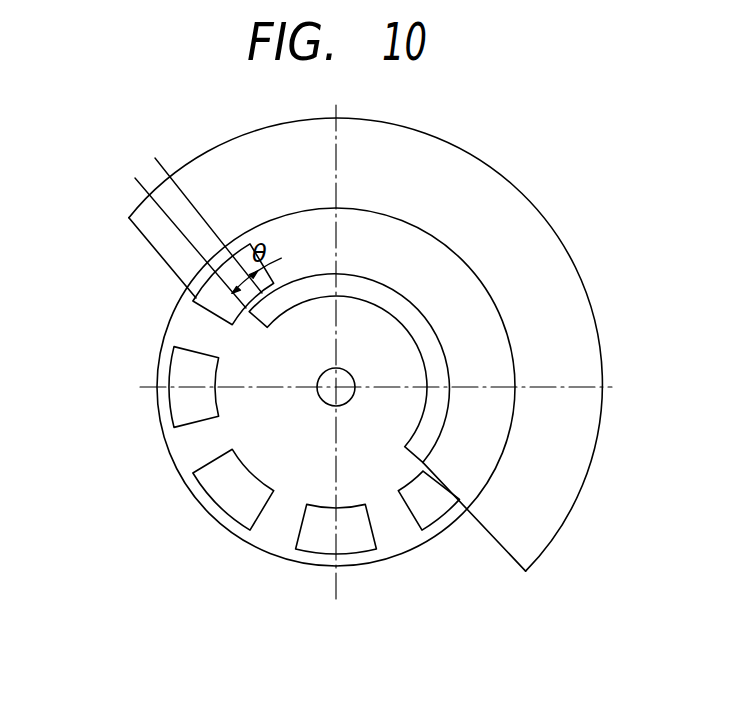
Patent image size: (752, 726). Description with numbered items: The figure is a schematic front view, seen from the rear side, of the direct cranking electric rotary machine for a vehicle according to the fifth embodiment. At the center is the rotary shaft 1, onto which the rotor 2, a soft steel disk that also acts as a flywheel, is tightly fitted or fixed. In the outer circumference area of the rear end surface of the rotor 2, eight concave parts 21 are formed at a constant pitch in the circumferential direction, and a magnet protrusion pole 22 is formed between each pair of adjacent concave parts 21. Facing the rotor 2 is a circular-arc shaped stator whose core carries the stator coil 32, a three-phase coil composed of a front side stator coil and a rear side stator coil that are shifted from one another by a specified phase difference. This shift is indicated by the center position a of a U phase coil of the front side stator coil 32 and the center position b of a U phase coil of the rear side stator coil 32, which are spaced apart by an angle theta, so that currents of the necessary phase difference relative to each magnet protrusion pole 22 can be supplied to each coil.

The rotary shaft 1 is at (317, 393).
The rotor 2 is at (205, 508).
The concave part 21 is at (317, 537).
The magnet protrusion pole 22 is at (275, 524).
The stator coil 32 is at (313, 292).
The center position of U phase coil of front side stator coil a is at (142, 189).
The center position of U phase coil of rear side stator coil b is at (165, 165).